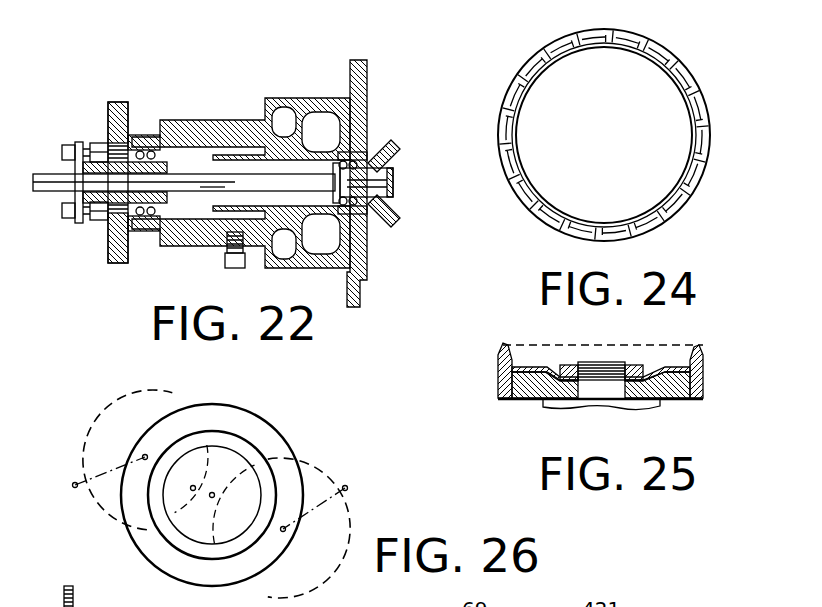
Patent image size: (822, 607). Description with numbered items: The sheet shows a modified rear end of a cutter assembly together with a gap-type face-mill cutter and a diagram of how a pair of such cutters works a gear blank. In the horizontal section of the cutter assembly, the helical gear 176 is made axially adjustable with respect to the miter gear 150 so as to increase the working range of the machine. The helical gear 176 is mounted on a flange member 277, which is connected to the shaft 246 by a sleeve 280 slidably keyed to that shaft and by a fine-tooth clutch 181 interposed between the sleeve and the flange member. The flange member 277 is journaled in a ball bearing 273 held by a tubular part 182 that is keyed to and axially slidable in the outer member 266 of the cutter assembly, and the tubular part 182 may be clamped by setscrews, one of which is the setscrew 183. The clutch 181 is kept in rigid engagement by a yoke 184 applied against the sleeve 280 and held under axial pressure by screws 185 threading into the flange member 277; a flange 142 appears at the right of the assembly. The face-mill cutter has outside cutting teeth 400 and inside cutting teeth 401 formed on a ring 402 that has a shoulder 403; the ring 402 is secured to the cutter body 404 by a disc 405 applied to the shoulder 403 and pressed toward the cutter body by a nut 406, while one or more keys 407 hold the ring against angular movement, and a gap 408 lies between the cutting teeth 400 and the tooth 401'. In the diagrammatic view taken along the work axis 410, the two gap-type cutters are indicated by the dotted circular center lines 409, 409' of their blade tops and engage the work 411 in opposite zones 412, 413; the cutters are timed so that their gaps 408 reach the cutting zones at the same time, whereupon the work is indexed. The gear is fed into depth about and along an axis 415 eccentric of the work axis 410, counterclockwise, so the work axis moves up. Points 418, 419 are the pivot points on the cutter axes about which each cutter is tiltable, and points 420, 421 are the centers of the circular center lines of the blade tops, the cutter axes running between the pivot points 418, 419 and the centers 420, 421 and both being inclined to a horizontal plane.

In FIG. 22, the flange 142 is at (362, 248).
In FIG. 22, the miter gear 150 is at (393, 137).
In FIG. 22, the helical gear 176 is at (118, 102).
In FIG. 22, the fine-tooth clutch 181 is at (95, 203).
In FIG. 22, the tubular part 182 is at (200, 121).
In FIG. 22, the setscrew 183 is at (228, 255).
In FIG. 22, the yoke 184 is at (75, 193).
In FIG. 22, the screw 185 is at (70, 222).
In FIG. 22, the shaft 246 is at (235, 180).
In FIG. 22, the outer member 266 is at (272, 108).
In FIG. 22, the ball bearing 273 is at (143, 150).
In FIG. 22, the flange member 277 is at (108, 144).
In FIG. 22, the sleeve 280 is at (83, 167).
In FIG. 24, the outside cutting teeth 400 is at (588, 33).
In FIG. 24, the inside cutting teeth 401 is at (548, 34).
In FIG. 24, the cutting tooth 401' is at (667, 68).
In FIG. 24, the ring 402 is at (700, 162).
In FIG. 25, the ring 402 is at (512, 378).
In FIG. 25, the shoulder 403 is at (703, 382).
In FIG. 25, the cutter body 404 is at (673, 401).
In FIG. 25, the disc 405 is at (548, 374).
In FIG. 25, the nut 406 is at (632, 368).
In FIG. 25, the key 407 is at (512, 398).
In FIG. 24, the gap 408 is at (660, 50).
In FIG. 26, the gap 408 is at (175, 403).
In FIG. 26, the circular center line 409 is at (331, 528).
In FIG. 26, the circular center line 409' is at (116, 457).
In FIG. 26, the work axis 410 is at (215, 492).
In FIG. 26, the work 411 is at (256, 430).
In FIG. 26, the cutting zone 412 is at (263, 460).
In FIG. 26, the cutting zone 413 is at (125, 525).
In FIG. 26, the axis 415 is at (191, 487).
In FIG. 26, the pivot point 418 is at (352, 484).
In FIG. 26, the pivot point 419 is at (72, 485).
In FIG. 26, the center 420 is at (286, 530).
In FIG. 26, the center 421 is at (143, 456).